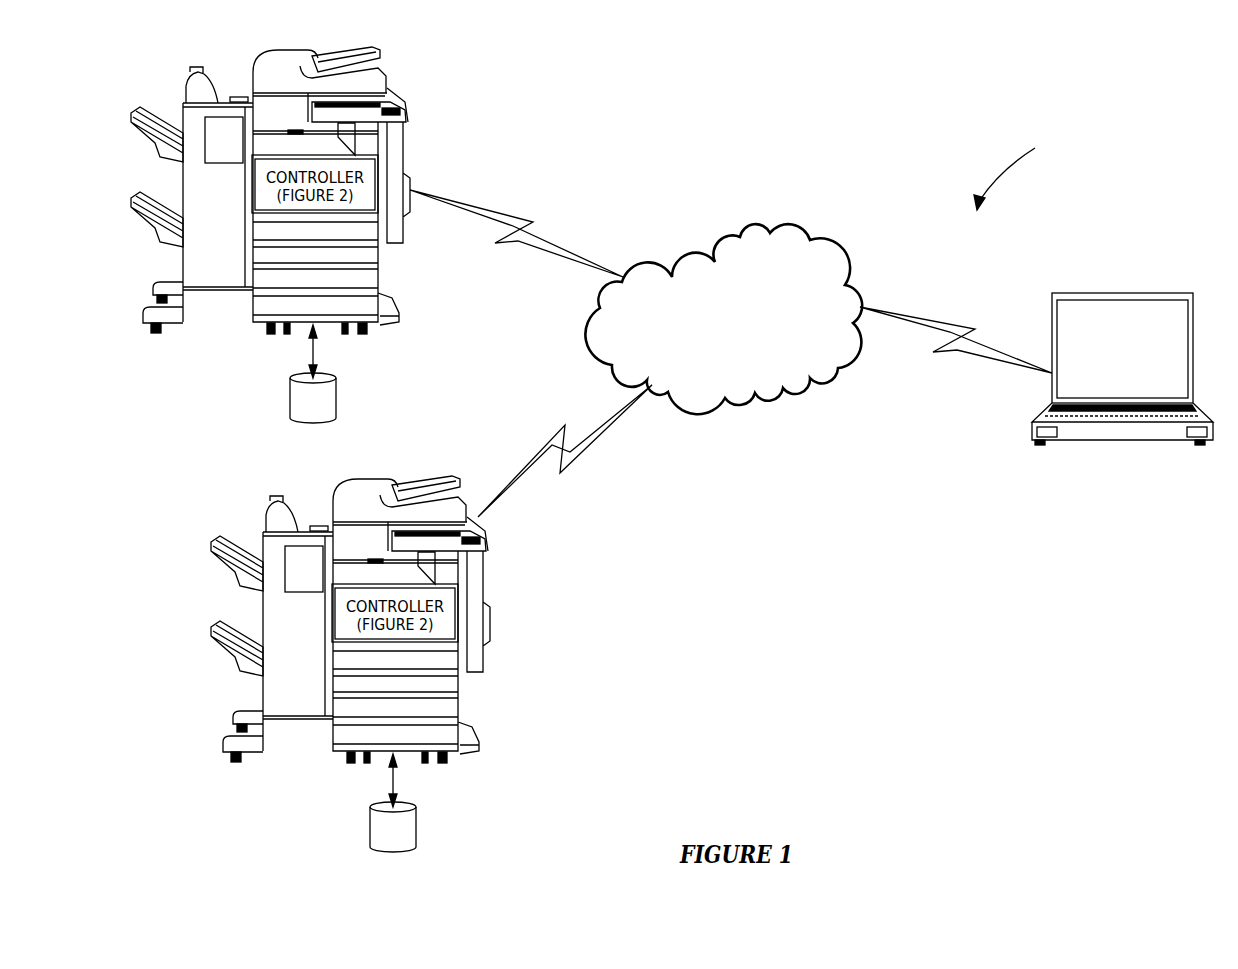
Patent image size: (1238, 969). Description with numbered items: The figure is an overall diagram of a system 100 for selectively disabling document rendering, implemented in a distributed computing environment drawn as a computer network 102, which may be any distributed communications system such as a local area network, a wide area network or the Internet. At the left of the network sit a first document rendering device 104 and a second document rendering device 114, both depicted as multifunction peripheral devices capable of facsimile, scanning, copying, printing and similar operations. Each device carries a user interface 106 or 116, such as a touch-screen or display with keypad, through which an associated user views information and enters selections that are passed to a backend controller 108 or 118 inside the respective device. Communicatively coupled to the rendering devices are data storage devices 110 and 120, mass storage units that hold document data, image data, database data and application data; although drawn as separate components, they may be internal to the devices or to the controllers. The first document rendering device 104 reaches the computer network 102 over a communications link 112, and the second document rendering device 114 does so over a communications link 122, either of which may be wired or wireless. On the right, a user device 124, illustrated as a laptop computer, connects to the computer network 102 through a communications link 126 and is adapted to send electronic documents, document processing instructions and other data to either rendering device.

The system 100 is at (1077, 152).
The computer network 102 is at (787, 211).
The first document rendering device 104 is at (184, 92).
The user interface 106 is at (403, 112).
The controller 108 is at (367, 200).
The data storage device 110 is at (337, 377).
The communications link 112 is at (517, 212).
The second document rendering device 114 is at (382, 480).
The user interface 116 is at (483, 541).
The controller 118 is at (447, 629).
The data storage device 120 is at (417, 810).
The communications link 122 is at (550, 442).
The user device 124 is at (1052, 302).
The communications link 126 is at (940, 318).